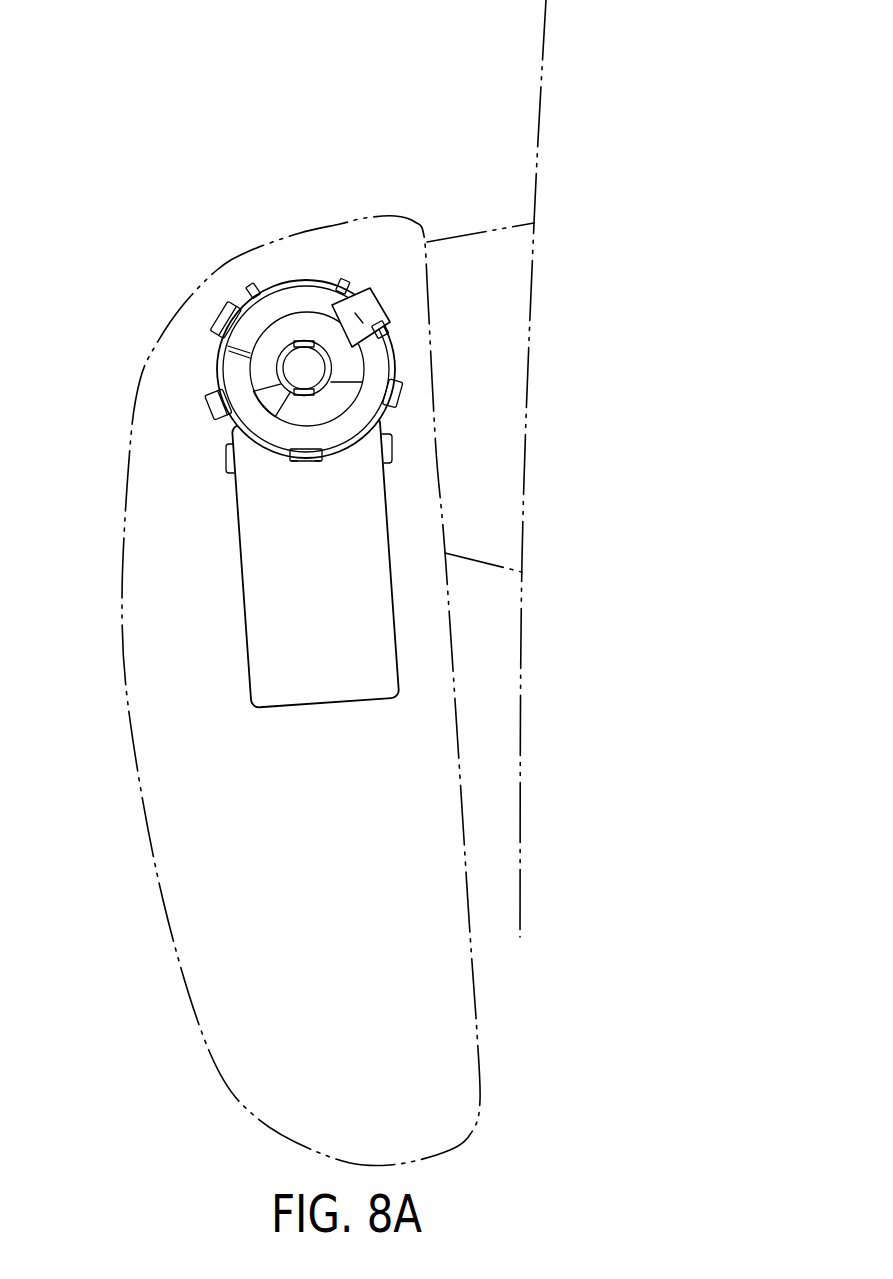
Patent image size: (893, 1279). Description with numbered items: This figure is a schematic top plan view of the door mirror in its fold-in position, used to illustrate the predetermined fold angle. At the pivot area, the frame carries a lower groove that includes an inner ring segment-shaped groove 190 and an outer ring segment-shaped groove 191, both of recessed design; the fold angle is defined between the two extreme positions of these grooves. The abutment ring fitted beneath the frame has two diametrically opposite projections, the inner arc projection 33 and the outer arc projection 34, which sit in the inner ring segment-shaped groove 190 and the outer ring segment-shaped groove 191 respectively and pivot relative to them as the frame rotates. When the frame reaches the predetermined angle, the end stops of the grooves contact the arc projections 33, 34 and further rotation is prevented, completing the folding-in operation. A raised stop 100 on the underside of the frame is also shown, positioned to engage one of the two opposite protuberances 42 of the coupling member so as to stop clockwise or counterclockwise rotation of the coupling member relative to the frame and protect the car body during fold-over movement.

The stop 100 is at (297, 460).
The outer arc projection 34 is at (333, 325).
The outer ring segment-shaped groove 191 is at (247, 325).
The protuberances 42 is at (341, 282).
The inner arc projection 33 is at (278, 393).
The inner ring segment-shaped groove 190 is at (332, 398).